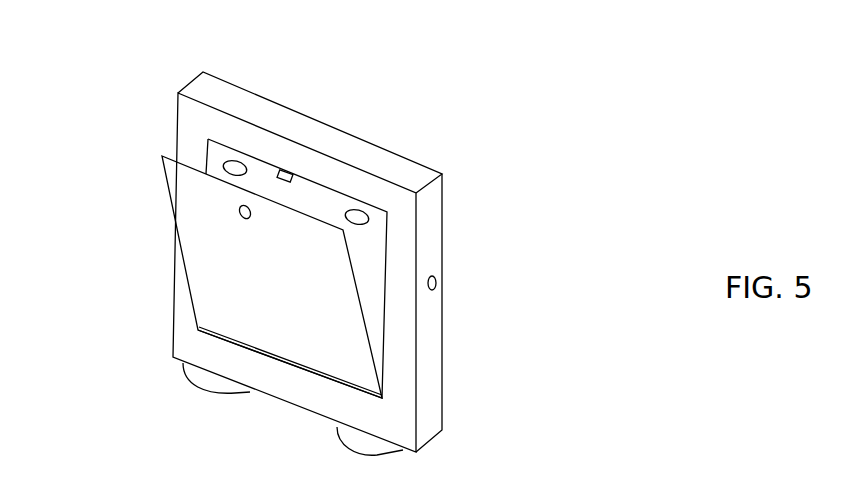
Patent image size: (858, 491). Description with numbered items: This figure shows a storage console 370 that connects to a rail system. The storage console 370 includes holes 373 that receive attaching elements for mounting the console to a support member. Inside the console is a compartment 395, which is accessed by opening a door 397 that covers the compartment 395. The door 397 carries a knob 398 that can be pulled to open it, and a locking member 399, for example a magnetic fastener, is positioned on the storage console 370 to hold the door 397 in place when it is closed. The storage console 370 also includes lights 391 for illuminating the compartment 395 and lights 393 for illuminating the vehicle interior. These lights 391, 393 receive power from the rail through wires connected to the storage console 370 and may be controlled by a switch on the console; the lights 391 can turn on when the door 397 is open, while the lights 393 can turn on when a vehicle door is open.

The storage console 370 is at (443, 215).
The holes 373 is at (438, 282).
The lights 391 is at (238, 160).
The lights 393 is at (215, 393).
The compartment 395 is at (320, 203).
The door 397 is at (177, 185).
The knob 398 is at (237, 217).
The locking member 399 is at (288, 170).